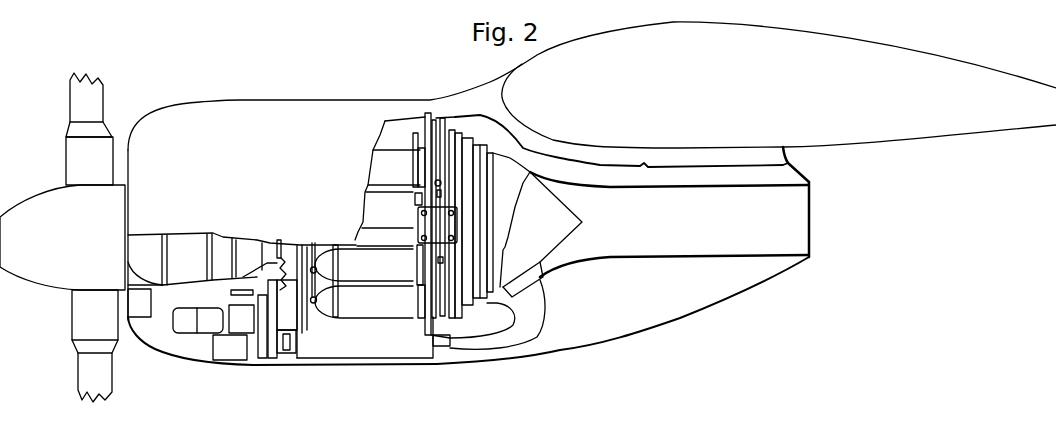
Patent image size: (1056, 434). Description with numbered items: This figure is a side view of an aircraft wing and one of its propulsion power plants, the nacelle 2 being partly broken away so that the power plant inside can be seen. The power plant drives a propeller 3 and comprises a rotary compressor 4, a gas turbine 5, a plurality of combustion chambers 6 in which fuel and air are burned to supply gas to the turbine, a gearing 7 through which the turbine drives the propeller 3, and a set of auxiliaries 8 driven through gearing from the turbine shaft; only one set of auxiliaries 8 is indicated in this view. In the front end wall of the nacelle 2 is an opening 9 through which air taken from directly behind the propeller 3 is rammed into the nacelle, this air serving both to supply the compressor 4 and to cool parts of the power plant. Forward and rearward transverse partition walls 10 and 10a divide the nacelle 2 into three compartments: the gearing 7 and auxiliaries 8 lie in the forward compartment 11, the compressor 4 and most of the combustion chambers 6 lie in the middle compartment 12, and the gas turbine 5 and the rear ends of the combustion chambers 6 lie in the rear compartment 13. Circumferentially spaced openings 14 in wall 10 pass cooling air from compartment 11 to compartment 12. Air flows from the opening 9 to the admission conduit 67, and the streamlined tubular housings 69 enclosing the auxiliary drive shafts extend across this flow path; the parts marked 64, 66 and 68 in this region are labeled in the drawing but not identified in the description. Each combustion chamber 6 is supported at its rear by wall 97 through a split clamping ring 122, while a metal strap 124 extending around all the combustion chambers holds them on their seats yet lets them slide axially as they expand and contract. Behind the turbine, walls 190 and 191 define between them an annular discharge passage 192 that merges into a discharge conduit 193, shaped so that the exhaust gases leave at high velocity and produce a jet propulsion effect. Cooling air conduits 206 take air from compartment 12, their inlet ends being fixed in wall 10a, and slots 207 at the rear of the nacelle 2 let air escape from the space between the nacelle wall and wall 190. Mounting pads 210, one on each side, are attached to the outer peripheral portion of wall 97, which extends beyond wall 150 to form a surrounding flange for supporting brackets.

The nacelle 2 is at (282, 365).
The propeller 3 is at (82, 371).
The rotary compressor 4 is at (362, 247).
The gas turbine 5 is at (463, 128).
The combustion chambers 6 is at (383, 228).
The gearing 7 is at (182, 245).
The auxiliaries 8 is at (210, 338).
The opening 9 is at (135, 305).
The forward transverse partition wall 10 is at (300, 347).
The rearward transverse partition wall 10a is at (427, 113).
The forward compartment 11 is at (160, 342).
The middle compartment 12 is at (368, 350).
The rear compartment 13 is at (597, 339).
The openings 14 is at (297, 298).
The drive shaft 64 is at (215, 247).
The shaft coupling 66 is at (281, 245).
The admission conduit 67 is at (277, 277).
The gear box 68 is at (175, 288).
The tubular housings 69 is at (233, 289).
The wall 97 is at (432, 150).
The split clamping ring 122 is at (413, 165).
The metal strap 124 is at (337, 320).
The wall 150 is at (442, 138).
The outer wall 190 is at (533, 202).
The wall 191 is at (551, 196).
The annular discharge passage 192 is at (560, 192).
The discharge conduit 193 is at (632, 196).
The conduits 206 is at (542, 305).
The slots 207 is at (810, 182).
The mounting pads 210 is at (455, 225).